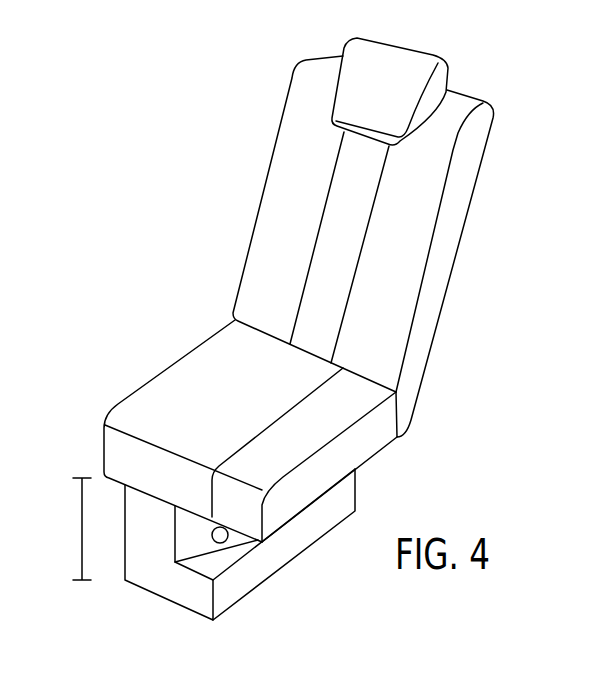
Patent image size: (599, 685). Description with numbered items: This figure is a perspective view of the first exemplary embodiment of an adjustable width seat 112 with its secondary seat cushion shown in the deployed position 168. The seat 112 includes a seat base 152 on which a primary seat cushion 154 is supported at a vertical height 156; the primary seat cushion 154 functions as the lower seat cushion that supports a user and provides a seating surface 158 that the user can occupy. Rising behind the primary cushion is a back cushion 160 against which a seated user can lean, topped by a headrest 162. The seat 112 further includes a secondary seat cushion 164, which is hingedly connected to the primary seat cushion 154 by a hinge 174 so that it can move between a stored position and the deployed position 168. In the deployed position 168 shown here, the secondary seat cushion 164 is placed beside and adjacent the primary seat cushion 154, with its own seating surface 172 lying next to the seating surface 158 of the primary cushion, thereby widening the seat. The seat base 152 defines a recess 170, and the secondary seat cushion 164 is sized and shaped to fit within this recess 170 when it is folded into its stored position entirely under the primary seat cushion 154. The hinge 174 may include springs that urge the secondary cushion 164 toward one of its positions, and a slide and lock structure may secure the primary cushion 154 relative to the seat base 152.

The seat 112 is at (470, 90).
The seat base 152 is at (158, 595).
The primary seat cushion 154 is at (112, 425).
The vertical height 156 is at (80, 528).
The seating surface 158 is at (260, 390).
The back cushion 160 is at (255, 226).
The headrest 162 is at (410, 47).
The secondary seat cushion 164 is at (367, 445).
The deployed position 168 is at (365, 485).
The recess 170 is at (210, 567).
The seating surface 172 is at (323, 438).
The hinge 174 is at (227, 541).